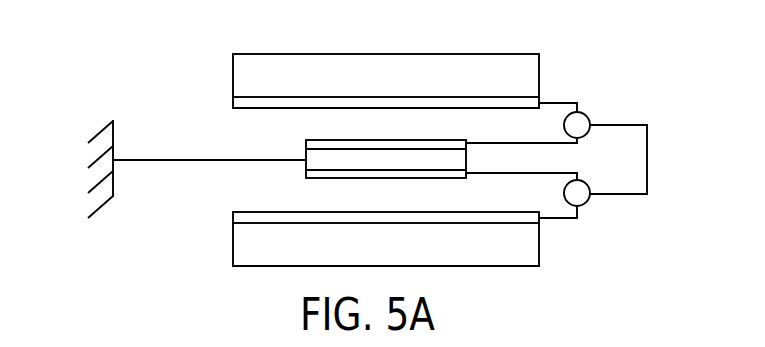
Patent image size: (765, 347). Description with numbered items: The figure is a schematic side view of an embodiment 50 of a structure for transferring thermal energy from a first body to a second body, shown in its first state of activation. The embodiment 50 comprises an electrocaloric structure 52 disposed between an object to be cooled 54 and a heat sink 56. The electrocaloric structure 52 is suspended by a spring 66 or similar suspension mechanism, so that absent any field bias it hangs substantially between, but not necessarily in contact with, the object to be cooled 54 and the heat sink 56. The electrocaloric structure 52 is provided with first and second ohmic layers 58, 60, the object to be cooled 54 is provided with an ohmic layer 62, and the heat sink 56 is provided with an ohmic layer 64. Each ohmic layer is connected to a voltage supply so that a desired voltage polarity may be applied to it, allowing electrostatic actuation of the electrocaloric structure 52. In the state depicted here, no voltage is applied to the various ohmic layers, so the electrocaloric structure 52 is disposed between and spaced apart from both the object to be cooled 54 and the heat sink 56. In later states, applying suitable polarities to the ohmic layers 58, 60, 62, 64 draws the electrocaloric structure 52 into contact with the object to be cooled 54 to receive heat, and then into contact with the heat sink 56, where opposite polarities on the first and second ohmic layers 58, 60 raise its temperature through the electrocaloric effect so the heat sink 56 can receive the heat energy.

The embodiment 50 is at (121, 69).
The electrocaloric structure 52 is at (453, 162).
The object to be cooled 54 is at (250, 74).
The heat sink 56 is at (240, 248).
The first ohmic layer 58 is at (312, 145).
The second ohmic layer 60 is at (312, 173).
The ohmic layer 62 is at (245, 102).
The ohmic layer 64 is at (240, 217).
The spring 66 is at (170, 161).